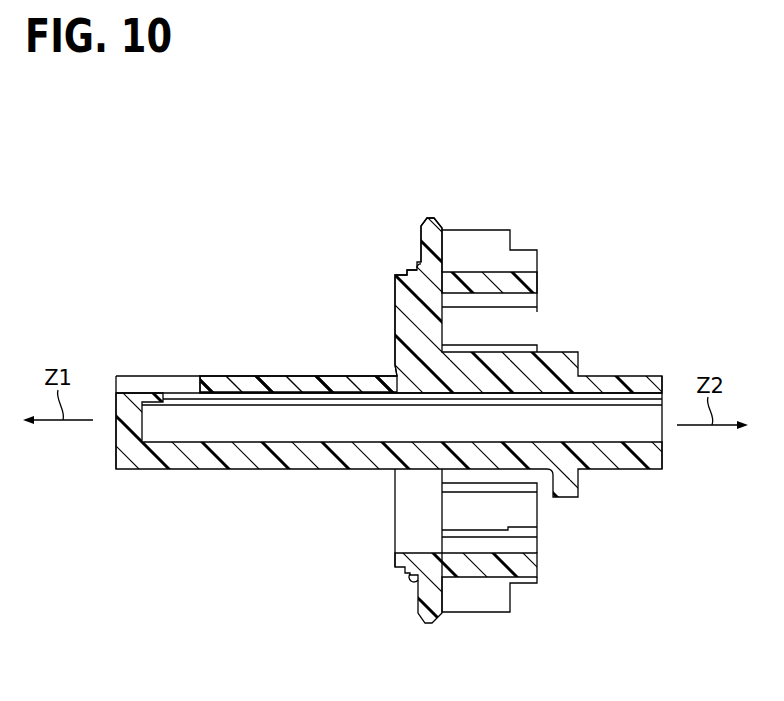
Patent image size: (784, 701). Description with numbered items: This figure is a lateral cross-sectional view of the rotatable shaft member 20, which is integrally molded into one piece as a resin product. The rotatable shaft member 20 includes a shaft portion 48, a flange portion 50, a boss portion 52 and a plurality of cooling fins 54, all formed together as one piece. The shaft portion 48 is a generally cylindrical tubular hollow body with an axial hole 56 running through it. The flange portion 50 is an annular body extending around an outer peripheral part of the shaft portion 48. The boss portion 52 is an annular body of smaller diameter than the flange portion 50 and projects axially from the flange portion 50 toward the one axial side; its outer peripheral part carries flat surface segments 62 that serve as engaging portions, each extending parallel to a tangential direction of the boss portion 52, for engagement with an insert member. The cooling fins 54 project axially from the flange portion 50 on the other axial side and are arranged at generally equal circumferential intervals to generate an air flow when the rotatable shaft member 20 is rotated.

The rotatable shaft member 20 is at (393, 123).
The shaft portion 48 is at (277, 376).
The flange portion 50 is at (430, 218).
The boss portion 52 is at (394, 285).
The cooling fins 54 is at (538, 300).
The axial hole 56 is at (350, 407).
The flat surface segments 62 is at (402, 268).